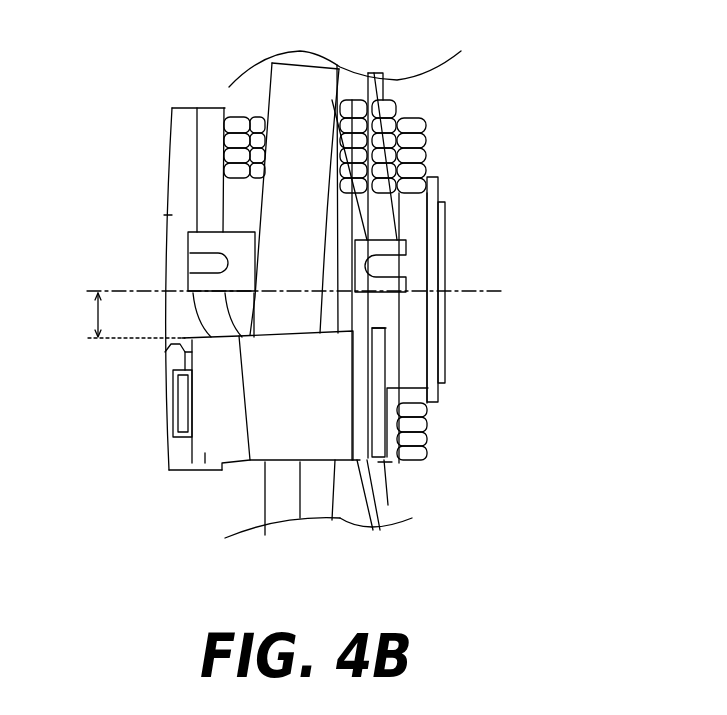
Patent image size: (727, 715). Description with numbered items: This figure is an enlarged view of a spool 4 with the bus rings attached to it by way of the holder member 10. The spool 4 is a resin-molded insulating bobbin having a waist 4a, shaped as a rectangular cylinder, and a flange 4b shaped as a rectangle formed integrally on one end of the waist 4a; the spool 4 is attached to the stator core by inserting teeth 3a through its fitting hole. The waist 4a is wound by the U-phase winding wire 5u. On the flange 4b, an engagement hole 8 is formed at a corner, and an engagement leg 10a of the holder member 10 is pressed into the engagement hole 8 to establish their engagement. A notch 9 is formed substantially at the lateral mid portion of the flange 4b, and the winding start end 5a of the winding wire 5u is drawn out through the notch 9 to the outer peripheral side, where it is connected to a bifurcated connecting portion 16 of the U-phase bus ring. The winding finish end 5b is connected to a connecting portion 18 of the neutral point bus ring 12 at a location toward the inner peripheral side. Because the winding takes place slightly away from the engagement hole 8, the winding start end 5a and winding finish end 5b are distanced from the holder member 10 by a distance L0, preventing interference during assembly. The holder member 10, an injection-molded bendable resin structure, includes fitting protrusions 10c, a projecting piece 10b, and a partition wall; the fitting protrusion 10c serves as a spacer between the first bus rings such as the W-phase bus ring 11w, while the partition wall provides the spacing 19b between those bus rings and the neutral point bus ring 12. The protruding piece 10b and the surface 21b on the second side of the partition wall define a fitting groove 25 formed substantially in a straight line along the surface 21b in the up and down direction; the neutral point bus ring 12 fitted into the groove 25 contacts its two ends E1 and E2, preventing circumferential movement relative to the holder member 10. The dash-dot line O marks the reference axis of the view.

The spool 4 is at (165, 128).
The connecting portion 16 is at (183, 232).
The U-phase winding wire 5u is at (428, 125).
The W-phase bus ring 11w is at (288, 90).
The neutral point bus ring 12 is at (375, 73).
The winding start end 5a is at (190, 260).
The winding finish end 5b is at (445, 265).
The connecting portion 18 is at (445, 243).
The teeth 3a is at (445, 334).
The axis O is at (490, 290).
The distance L0 is at (122, 315).
The end of fitting groove E1 is at (376, 328).
The protruding piece 10b is at (386, 364).
The fitting groove 25 is at (345, 376).
The holder member 10 is at (243, 462).
The notch 9 is at (165, 350).
The engagement leg 10a is at (172, 400).
The engagement hole 8 is at (167, 430).
The flange 4b is at (170, 469).
The fitting protrusion 10c is at (291, 440).
The spacing 19b is at (355, 512).
The surface 21b is at (380, 492).
The end of fitting groove E2 is at (382, 462).
The waist 4a is at (408, 390).